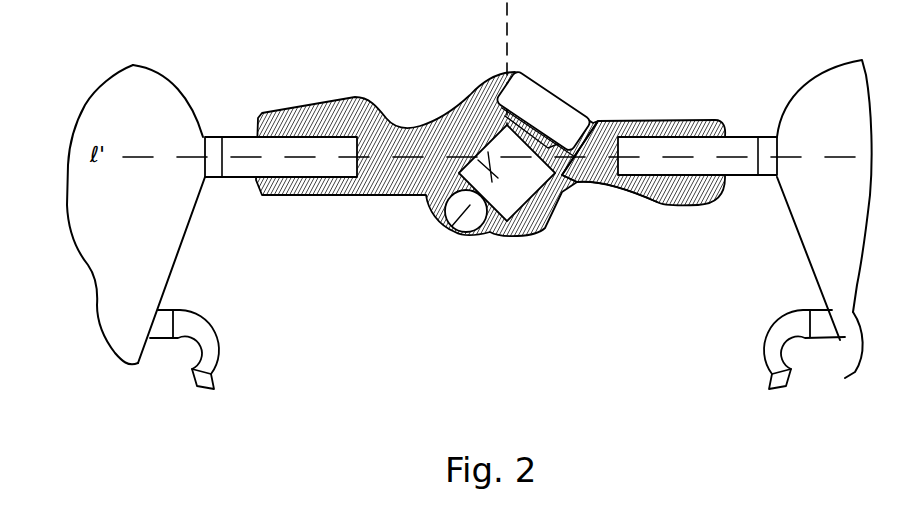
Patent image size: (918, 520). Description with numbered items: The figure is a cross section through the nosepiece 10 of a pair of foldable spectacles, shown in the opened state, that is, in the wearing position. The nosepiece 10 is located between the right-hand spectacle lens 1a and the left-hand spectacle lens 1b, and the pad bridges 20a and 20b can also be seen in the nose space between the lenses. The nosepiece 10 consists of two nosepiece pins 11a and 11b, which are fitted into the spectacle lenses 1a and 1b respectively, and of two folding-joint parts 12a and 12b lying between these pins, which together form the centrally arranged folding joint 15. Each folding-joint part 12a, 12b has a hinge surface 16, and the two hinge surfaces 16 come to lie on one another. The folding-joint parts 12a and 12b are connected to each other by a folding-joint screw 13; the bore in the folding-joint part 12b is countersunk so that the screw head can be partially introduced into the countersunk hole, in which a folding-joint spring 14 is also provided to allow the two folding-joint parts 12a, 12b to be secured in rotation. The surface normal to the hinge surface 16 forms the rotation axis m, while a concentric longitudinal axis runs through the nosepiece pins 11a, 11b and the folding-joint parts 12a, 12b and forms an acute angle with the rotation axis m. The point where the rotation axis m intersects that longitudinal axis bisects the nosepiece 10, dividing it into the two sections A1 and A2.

The nosepiece 10 is at (620, 310).
The spectacle lens 1a is at (150, 256).
The spectacle lens 1b is at (865, 315).
The nosepiece pin 11a is at (313, 167).
The nosepiece pin 11b is at (697, 160).
The folding-joint part 12a is at (388, 182).
The folding-joint part 12b is at (660, 200).
The folding-joint screw 13 is at (505, 232).
The folding-joint spring 14 is at (568, 140).
The folding joint 15 is at (470, 232).
The hinge surface 16 is at (553, 178).
The pad bridge 20a is at (208, 354).
The pad bridge 20b is at (775, 343).
The rotation axis m is at (545, 100).
The section of the nosepiece A1 is at (505, 40).
The section of the nosepiece A2 is at (775, 140).